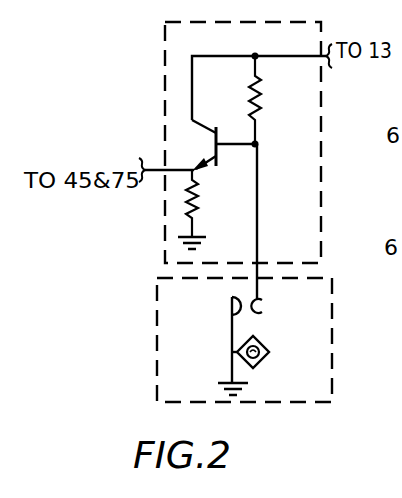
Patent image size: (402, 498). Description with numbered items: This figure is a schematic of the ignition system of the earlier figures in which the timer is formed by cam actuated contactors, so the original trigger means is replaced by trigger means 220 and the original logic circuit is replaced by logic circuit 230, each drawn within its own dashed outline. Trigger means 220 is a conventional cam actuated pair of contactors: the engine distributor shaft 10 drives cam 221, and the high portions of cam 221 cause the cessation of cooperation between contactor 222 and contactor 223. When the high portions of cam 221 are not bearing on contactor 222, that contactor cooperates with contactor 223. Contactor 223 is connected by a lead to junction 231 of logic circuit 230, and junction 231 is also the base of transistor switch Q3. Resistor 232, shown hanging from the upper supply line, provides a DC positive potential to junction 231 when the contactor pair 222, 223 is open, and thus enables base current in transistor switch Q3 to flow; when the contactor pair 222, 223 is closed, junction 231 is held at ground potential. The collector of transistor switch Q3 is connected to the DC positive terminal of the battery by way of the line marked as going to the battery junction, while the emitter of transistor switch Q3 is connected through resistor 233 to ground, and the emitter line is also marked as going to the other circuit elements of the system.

The logic circuit 230 is at (326, 193).
The trigger means 220 is at (335, 342).
The transistor switch Q3 is at (211, 145).
The junction 231 is at (258, 144).
The resistor 232 is at (262, 95).
The resistor 233 is at (216, 206).
The contactor 223 is at (264, 297).
The contactor 222 is at (232, 327).
The cam 221 is at (272, 356).
The engine distributor shaft 10 is at (262, 362).